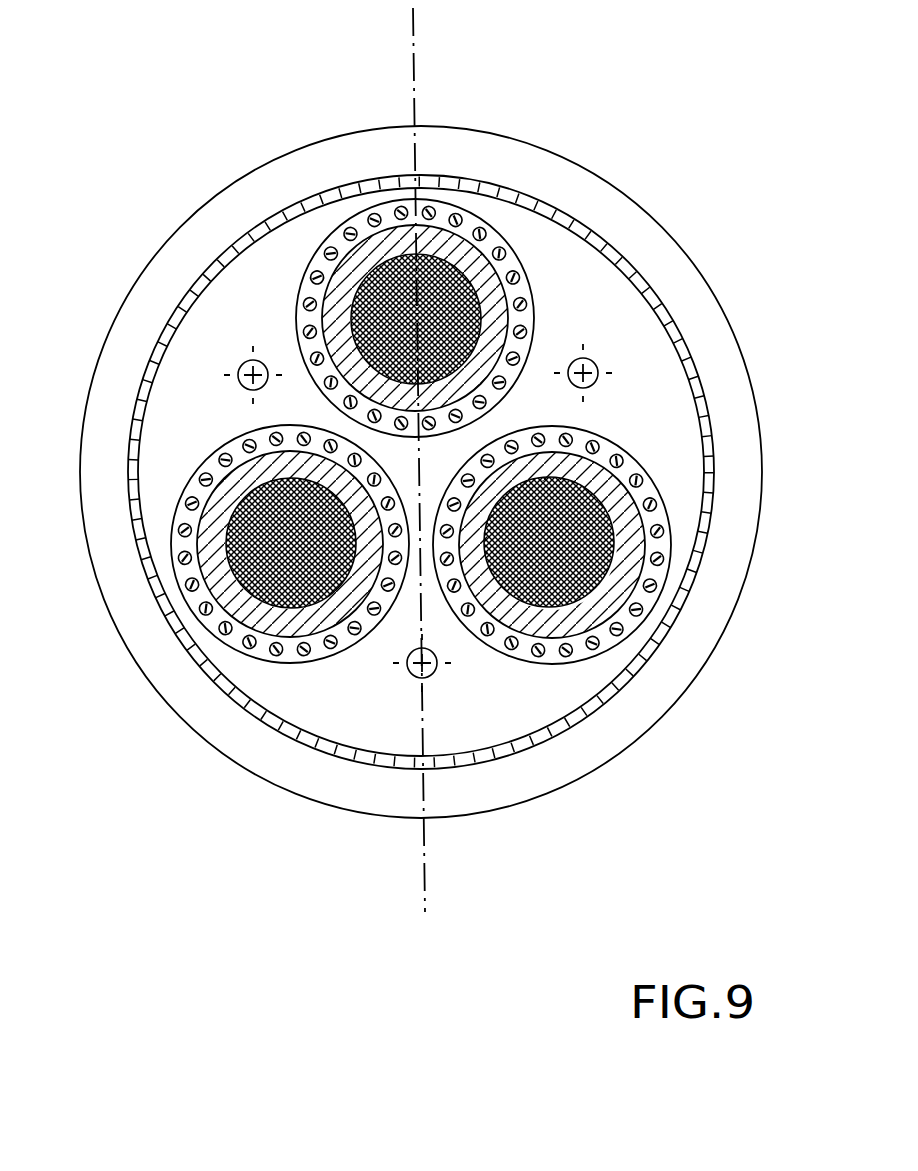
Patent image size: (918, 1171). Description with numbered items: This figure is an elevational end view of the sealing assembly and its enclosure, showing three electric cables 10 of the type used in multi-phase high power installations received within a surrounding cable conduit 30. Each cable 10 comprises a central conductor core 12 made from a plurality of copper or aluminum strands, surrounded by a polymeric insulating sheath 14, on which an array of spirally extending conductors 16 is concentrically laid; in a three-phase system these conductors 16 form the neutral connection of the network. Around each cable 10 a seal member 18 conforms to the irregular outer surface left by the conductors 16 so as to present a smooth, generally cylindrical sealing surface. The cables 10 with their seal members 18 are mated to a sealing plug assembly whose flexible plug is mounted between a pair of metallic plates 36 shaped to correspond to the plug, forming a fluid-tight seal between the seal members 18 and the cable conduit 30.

The electric cable 10 is at (436, 22).
The central conductor core 12 is at (462, 250).
The polymeric insulating sheath 14 is at (343, 273).
The spirally extending conductors 16 is at (470, 222).
The seal member 18 is at (282, 304).
The cable conduit 30 is at (647, 239).
The metallic plates 36 is at (640, 313).